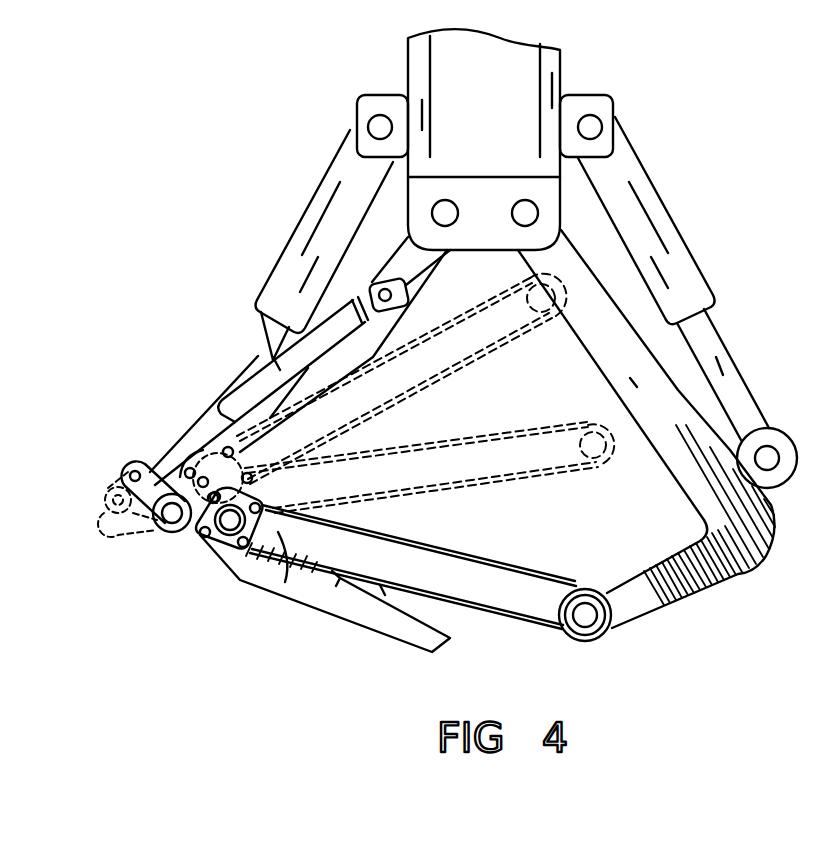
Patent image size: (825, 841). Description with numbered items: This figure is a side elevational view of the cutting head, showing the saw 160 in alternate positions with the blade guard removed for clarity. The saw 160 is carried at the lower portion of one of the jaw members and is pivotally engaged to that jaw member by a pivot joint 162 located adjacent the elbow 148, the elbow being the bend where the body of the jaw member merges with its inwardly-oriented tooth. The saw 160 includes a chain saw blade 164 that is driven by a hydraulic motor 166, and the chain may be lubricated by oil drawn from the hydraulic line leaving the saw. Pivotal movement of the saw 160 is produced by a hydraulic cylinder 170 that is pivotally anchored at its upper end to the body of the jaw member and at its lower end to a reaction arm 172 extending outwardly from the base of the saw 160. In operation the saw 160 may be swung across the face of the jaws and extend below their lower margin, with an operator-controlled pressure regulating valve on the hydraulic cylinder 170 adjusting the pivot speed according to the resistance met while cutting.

The elbow 148 is at (222, 552).
The saw 160 is at (283, 583).
The pivot joint 162 is at (172, 533).
The chain saw blade 164 is at (525, 585).
The hydraulic motor 166 is at (213, 552).
The hydraulic cylinder 170 is at (277, 370).
The reaction arm 172 is at (132, 463).